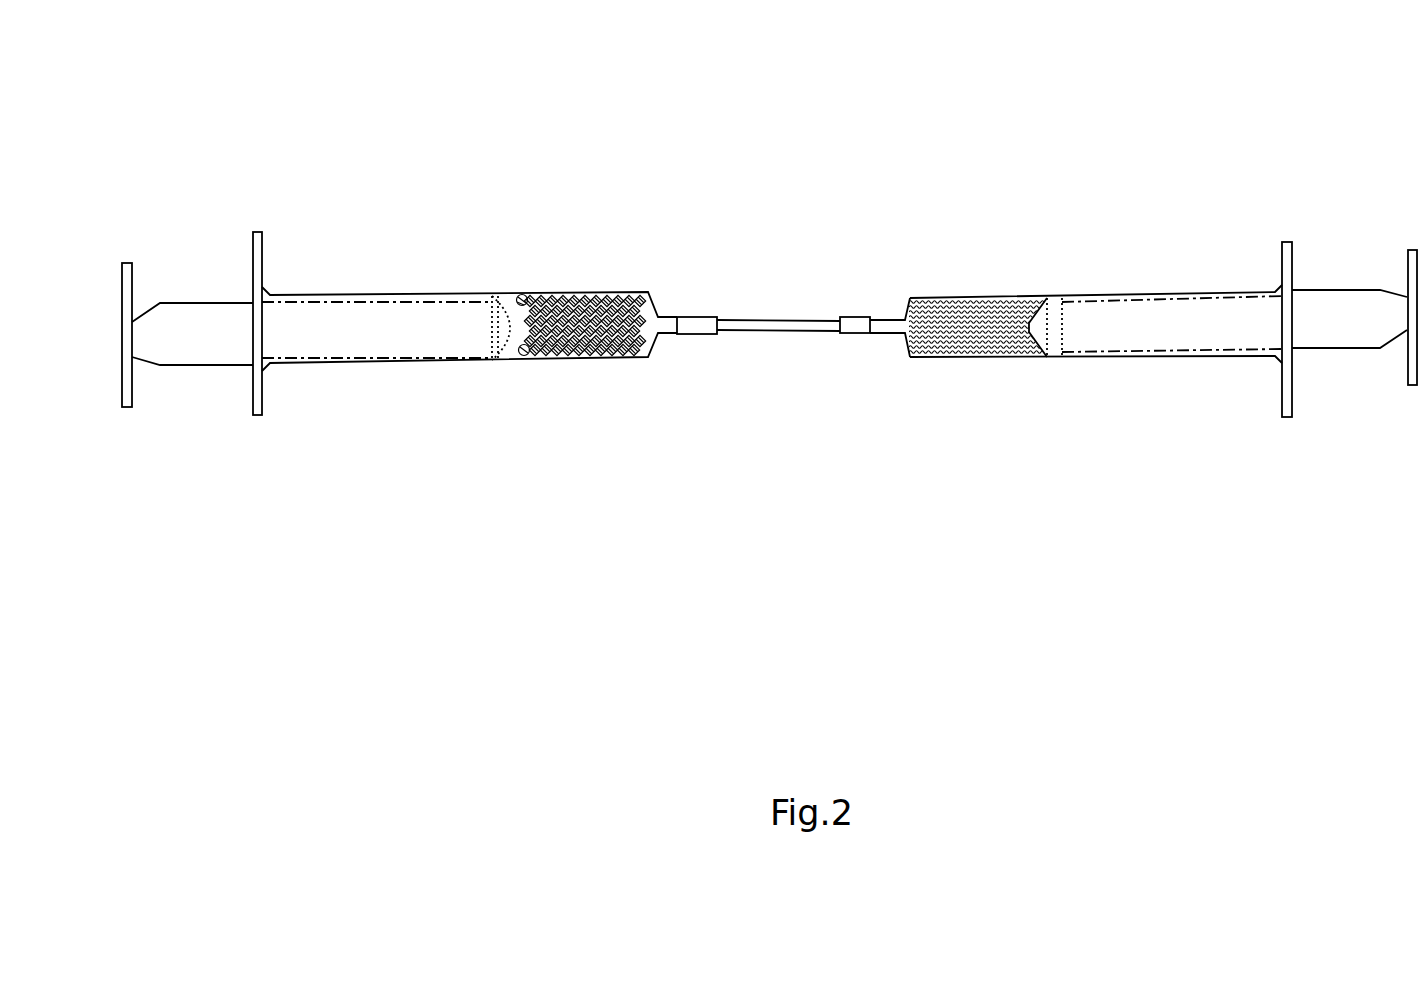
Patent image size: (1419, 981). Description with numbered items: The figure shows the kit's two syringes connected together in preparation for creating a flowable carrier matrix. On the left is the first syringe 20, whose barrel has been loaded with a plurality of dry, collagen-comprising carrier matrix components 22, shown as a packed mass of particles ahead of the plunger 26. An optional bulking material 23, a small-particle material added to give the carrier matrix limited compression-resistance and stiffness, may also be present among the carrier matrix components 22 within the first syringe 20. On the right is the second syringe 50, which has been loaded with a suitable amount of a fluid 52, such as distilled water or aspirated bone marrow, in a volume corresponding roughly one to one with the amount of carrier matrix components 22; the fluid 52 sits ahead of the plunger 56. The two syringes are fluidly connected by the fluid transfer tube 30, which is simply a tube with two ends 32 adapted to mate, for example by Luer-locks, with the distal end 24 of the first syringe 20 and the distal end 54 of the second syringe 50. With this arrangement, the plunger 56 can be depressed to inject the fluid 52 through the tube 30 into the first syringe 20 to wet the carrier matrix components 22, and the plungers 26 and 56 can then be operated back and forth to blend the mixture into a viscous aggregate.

The first syringe 20 is at (410, 312).
The carrier matrix components 22 is at (583, 340).
The bulking material 23 is at (525, 354).
The distal end of the first syringe 24 is at (670, 312).
The plunger of the first syringe 26 is at (482, 325).
The fluid transfer tube 30 is at (792, 338).
The ends of the fluid transfer tube 32 is at (702, 312).
The second syringe 50 is at (1143, 279).
The fluid 52 is at (973, 335).
The distal end of the second syringe 54 is at (888, 342).
The plunger of the second syringe 56 is at (1090, 327).